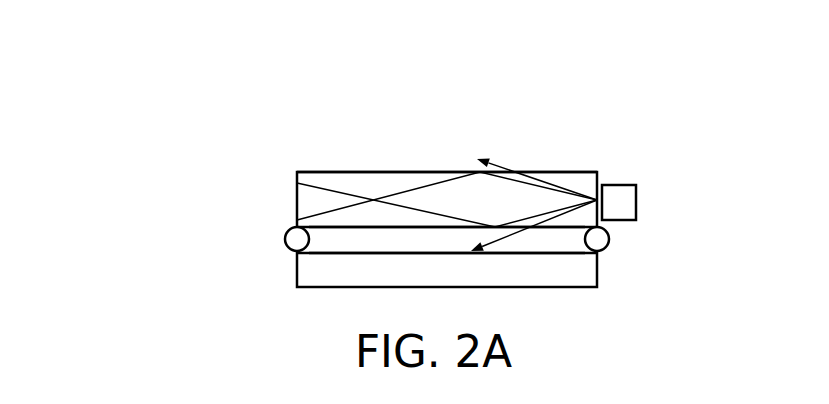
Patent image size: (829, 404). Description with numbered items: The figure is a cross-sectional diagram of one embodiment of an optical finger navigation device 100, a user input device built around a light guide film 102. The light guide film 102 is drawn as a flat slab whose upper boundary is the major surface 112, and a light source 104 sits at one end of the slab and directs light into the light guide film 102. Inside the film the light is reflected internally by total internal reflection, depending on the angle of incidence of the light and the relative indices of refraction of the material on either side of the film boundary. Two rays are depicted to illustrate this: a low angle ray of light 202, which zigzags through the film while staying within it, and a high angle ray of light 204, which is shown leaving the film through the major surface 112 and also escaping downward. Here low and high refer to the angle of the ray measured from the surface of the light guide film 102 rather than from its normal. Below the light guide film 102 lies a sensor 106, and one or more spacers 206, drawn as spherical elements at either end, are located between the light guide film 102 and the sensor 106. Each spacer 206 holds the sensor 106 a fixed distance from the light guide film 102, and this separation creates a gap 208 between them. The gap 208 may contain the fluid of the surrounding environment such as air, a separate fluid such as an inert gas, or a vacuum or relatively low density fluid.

The optical finger navigation device 100 is at (216, 50).
The major surface 112 is at (347, 163).
The light guide film 102 is at (297, 207).
The low angle ray of light 202 is at (425, 187).
The high angle ray of light 204 is at (577, 190).
The light source 104 is at (637, 201).
The spacer 206 is at (285, 239).
The gap 208 is at (430, 228).
The sensor 106 is at (297, 273).